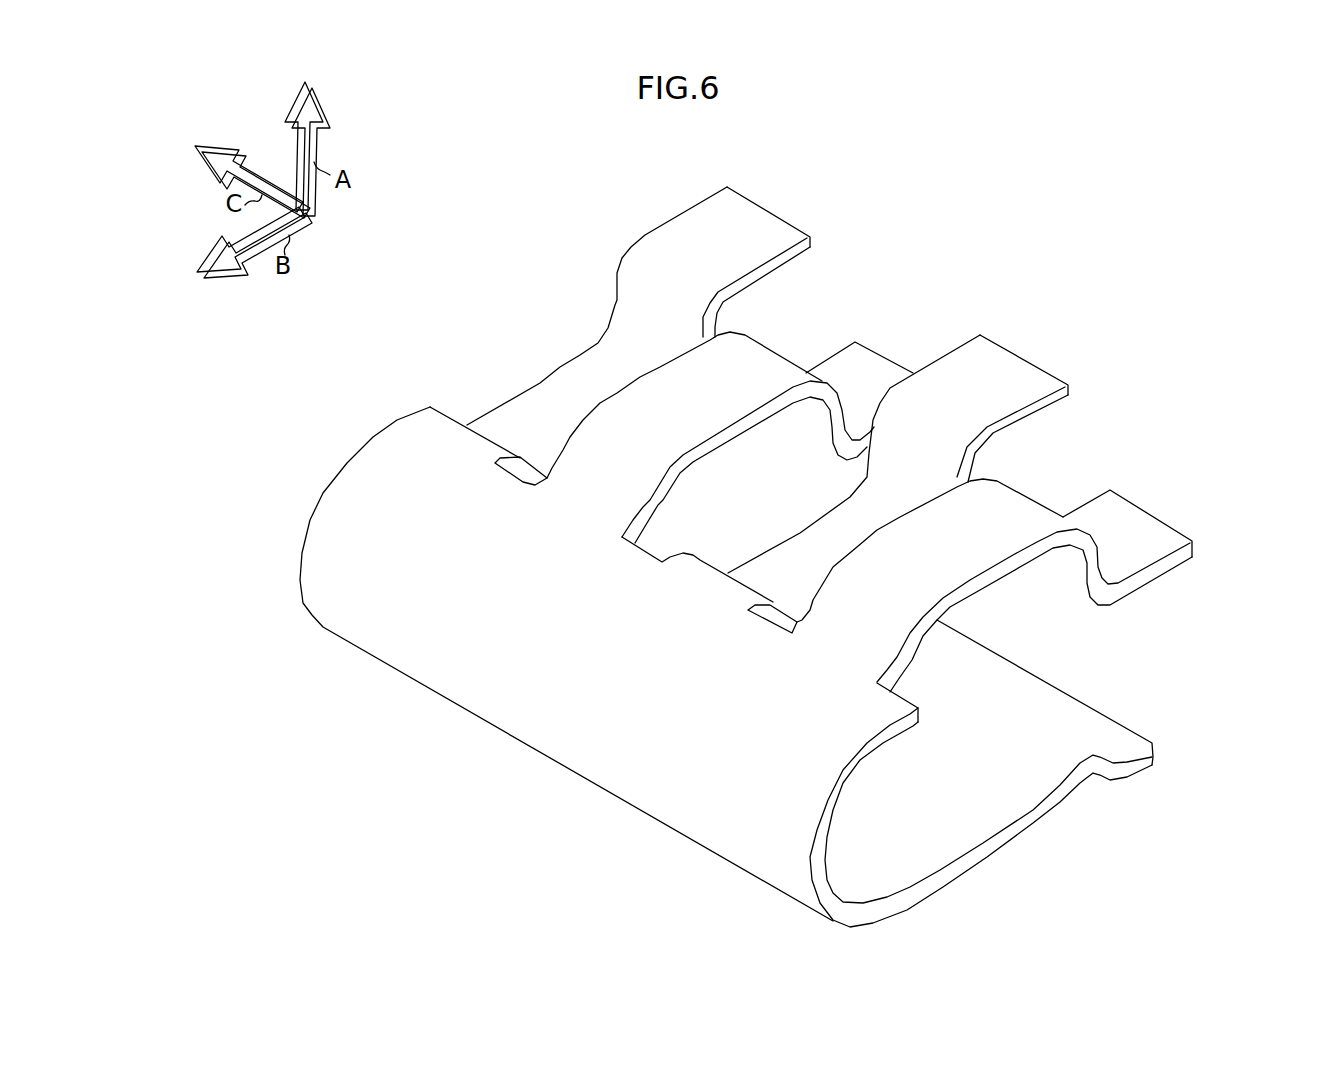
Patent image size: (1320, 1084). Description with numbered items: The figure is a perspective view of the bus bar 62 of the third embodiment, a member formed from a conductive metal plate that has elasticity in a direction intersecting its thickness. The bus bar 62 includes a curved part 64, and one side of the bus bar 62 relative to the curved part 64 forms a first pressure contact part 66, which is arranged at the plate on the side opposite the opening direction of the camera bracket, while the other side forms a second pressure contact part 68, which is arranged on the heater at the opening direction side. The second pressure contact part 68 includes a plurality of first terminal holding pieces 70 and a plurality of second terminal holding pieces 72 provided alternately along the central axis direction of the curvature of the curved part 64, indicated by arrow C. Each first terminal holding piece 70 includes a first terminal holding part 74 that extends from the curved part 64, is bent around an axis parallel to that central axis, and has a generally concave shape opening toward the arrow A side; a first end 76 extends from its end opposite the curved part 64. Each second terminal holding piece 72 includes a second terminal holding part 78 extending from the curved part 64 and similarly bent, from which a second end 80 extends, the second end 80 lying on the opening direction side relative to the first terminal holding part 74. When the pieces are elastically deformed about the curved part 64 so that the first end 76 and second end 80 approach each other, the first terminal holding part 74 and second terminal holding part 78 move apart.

The bus bar 62 is at (1045, 193).
The curved part 64 is at (678, 825).
The first pressure contact part 66 is at (933, 813).
The second pressure contact part 68 is at (885, 215).
The first terminal holding piece 70 is at (792, 190).
The second terminal holding piece 72 is at (900, 335).
The first terminal holding part 74 is at (550, 390).
The first end 76 is at (758, 207).
The second terminal holding part 78 is at (697, 409).
The second end 80 is at (865, 357).